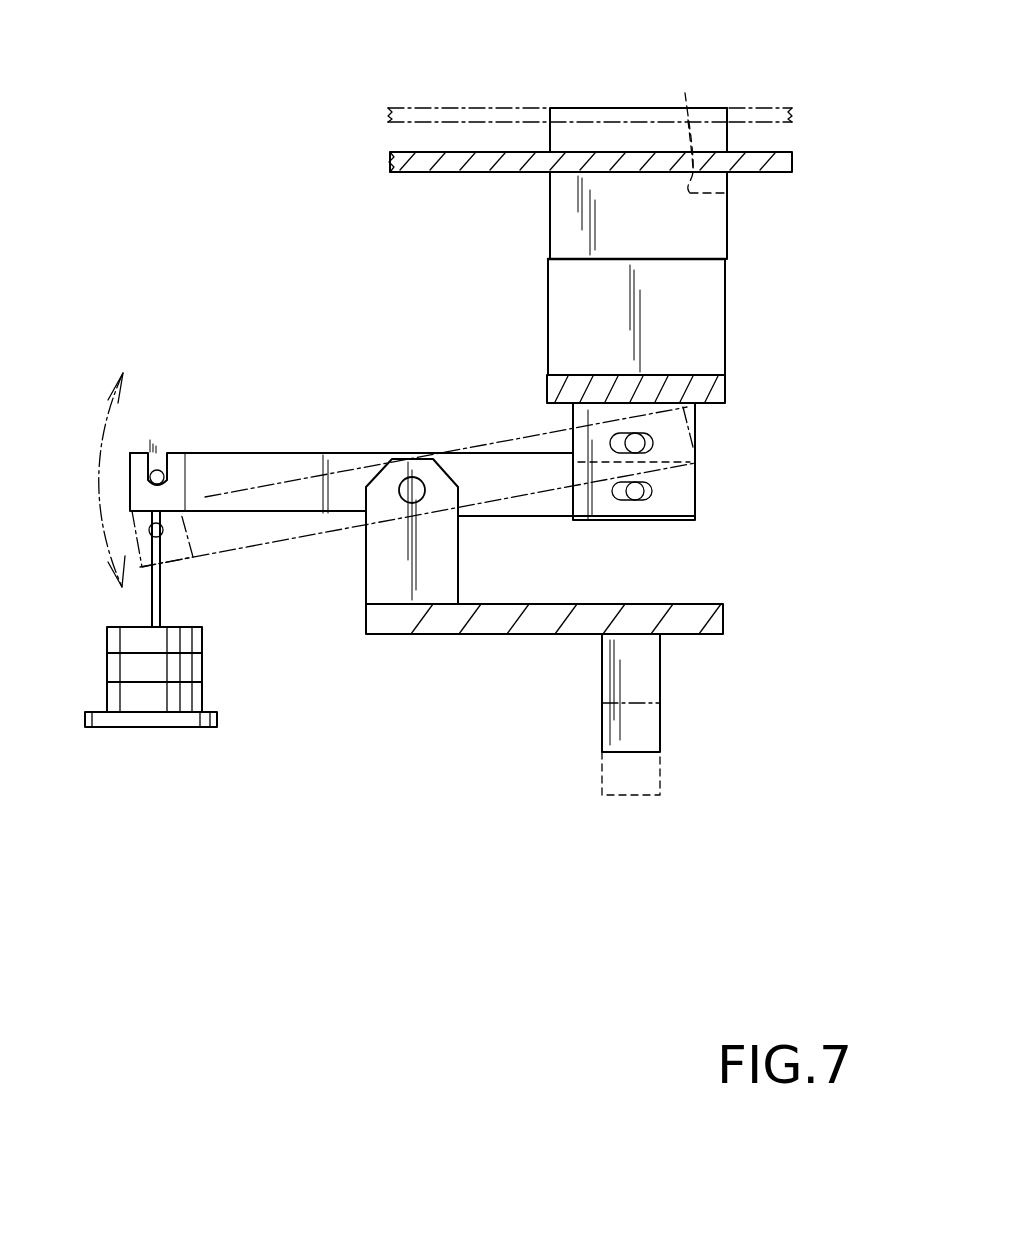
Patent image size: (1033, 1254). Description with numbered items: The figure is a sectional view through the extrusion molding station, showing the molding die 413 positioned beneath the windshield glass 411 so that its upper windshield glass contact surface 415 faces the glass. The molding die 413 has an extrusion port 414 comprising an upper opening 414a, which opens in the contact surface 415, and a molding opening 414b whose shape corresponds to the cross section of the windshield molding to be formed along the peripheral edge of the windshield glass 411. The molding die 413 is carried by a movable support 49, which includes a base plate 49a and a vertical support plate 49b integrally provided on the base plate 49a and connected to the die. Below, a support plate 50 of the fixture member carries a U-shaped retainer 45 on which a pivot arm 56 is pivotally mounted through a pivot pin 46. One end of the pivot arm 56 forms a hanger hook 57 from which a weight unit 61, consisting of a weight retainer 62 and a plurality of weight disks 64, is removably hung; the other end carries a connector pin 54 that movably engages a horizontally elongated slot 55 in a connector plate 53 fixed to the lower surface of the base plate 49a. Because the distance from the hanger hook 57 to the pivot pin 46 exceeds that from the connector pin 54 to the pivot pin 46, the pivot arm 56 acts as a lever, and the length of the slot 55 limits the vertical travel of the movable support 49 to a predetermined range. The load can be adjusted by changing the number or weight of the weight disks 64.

The windshield glass 411 is at (755, 163).
The windshield glass contact surface 415 is at (633, 167).
The molding die 413 is at (730, 247).
The extrusion port 414 is at (676, 192).
The upper opening 414a is at (692, 118).
The molding opening 414b is at (728, 185).
The movable support 49 is at (652, 331).
The base plate 49a is at (583, 387).
The vertical support plate 49b is at (693, 315).
The connector plate 53 is at (698, 428).
The connector pin 54 is at (695, 463).
The slot 55 is at (655, 502).
The pivot arm 56 is at (277, 468).
The pivot pin 46 is at (411, 476).
The U-shaped retainer 45 is at (387, 572).
The support plate 50 is at (497, 620).
The hanger hook 57 is at (135, 500).
The weight unit 61 is at (158, 619).
The weight retainer 62 is at (157, 607).
The weight disks 64 is at (202, 633).